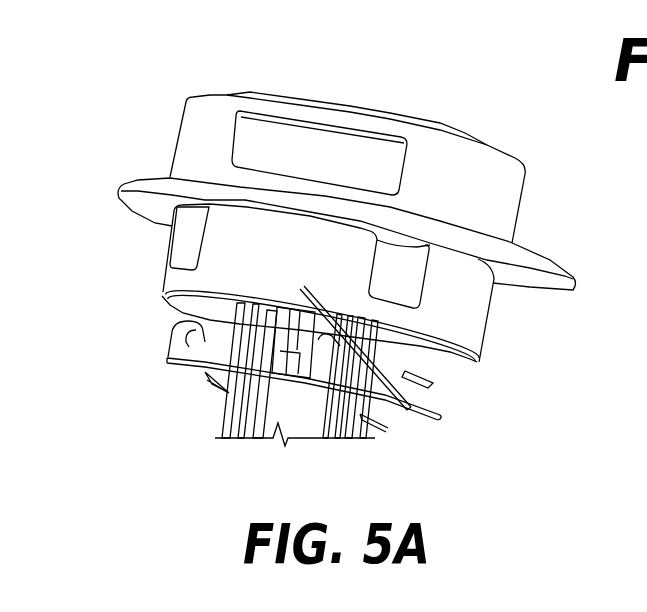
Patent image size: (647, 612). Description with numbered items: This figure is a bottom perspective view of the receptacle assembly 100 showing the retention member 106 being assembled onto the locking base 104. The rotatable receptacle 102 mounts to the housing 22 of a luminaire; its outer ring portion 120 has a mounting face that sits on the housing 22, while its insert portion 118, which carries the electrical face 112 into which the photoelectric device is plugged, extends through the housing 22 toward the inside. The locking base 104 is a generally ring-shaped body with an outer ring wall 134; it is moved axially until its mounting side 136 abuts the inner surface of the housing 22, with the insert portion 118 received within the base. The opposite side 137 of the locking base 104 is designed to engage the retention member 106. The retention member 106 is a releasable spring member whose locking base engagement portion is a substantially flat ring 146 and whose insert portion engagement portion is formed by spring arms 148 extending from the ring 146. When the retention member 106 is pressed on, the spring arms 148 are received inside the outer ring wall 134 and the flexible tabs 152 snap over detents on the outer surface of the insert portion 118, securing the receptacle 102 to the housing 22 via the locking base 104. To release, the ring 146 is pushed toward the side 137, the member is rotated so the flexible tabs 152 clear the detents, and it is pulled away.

The receptacle assembly 100 is at (363, 256).
The rotatable receptacle 102 is at (518, 152).
The locking base 104 is at (484, 295).
The retention member 106 is at (447, 420).
The electrical face 112 is at (278, 94).
The insert portion 118 is at (403, 405).
The outer ring portion 120 is at (511, 190).
The outer ring wall 134 is at (170, 289).
The mounting side 136 is at (180, 208).
The opposite side 137 is at (477, 363).
The ring 146 is at (205, 380).
The spring arms 148 is at (328, 334).
The flexible tabs 152 is at (377, 423).
The housing 22 is at (573, 280).